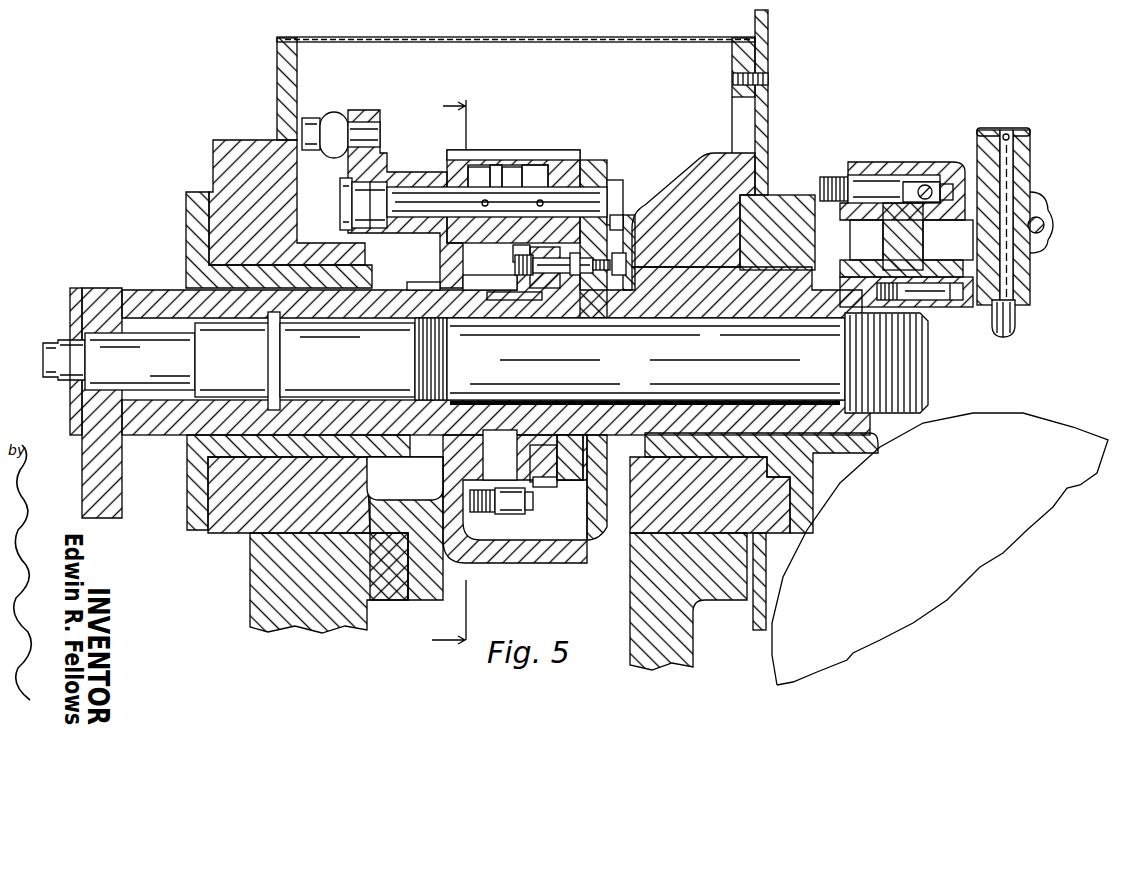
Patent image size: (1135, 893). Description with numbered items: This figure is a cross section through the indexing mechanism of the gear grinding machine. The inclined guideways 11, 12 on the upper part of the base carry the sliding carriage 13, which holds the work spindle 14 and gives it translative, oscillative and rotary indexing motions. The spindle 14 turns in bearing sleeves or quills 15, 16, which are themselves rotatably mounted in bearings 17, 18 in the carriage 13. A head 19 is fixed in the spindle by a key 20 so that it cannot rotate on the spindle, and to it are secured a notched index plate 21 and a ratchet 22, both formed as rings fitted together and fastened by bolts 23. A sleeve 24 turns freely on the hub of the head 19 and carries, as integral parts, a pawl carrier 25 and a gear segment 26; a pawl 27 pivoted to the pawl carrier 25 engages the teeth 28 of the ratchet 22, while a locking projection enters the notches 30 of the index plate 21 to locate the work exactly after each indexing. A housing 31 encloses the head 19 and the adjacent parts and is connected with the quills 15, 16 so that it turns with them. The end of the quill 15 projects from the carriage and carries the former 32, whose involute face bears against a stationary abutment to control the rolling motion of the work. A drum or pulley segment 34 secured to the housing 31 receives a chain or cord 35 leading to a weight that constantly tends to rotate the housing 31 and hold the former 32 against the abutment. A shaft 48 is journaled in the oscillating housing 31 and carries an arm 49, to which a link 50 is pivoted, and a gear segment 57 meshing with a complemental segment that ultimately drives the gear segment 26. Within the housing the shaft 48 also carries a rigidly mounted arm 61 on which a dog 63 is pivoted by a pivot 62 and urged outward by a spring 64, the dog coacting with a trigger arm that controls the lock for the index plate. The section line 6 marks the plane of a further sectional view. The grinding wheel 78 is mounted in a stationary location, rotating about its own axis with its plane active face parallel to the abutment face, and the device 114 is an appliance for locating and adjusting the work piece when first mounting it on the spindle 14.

The section line 6- 6 is at (440, 373).
The guideway 11 is at (307, 534).
The guideway 12 is at (722, 547).
The carriage 13 is at (268, 190).
The work spindle 14 is at (907, 358).
The bearing sleeve or quill 15 is at (172, 296).
The bearing sleeve or quill 16 is at (735, 282).
The bearing 17 is at (240, 272).
The bearing 18 is at (780, 216).
The head 19 is at (572, 478).
The key 20 is at (467, 290).
The notched index plate 21 is at (545, 484).
The ratchet 22 is at (513, 490).
The bolts 23 is at (606, 230).
The sleeve 24 is at (508, 293).
The pawl carrier 25 is at (488, 492).
The gear segment 26 is at (484, 278).
The pawl 27 is at (489, 507).
The teeth 28 is at (523, 248).
The notches 30 is at (560, 266).
The housing 31 is at (600, 528).
The former 32 is at (95, 456).
The drum or pulley segment 34 is at (637, 240).
The chain or cord 35 is at (650, 205).
The shaft 48 is at (443, 203).
The arm 49 is at (378, 166).
The link 50 is at (322, 124).
The gear segment 57 is at (397, 186).
The arm 61 is at (545, 172).
The pivot 62 is at (522, 170).
The dog 63 is at (510, 170).
The spring 64 is at (498, 167).
The grinding wheel 78 is at (1014, 430).
The appliance for locating and adjusting the work piece 114 is at (1007, 302).